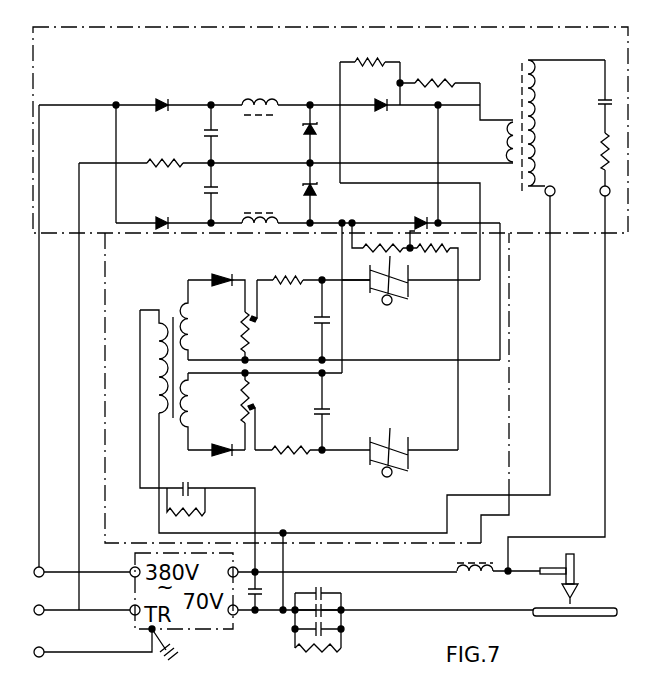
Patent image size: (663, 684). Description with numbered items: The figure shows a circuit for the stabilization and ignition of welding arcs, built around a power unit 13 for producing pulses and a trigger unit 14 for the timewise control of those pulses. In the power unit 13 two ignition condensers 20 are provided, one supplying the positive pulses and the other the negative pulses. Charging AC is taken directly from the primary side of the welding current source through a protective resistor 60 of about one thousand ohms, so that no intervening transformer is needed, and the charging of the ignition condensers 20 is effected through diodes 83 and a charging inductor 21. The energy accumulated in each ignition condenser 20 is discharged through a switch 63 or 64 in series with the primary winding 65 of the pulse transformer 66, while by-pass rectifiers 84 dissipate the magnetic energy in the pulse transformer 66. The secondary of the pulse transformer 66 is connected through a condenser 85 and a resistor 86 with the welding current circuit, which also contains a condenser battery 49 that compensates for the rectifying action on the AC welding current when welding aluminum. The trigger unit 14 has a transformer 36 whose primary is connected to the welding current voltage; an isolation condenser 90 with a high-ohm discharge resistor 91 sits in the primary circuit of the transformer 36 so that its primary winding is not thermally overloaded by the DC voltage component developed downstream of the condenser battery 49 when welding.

The power unit 13 is at (575, 233).
The trigger unit 14 is at (497, 403).
The ignition condenser 20 is at (213, 135).
The charging inductor 21 is at (258, 103).
The transformer 36 is at (173, 316).
The condenser battery 49 is at (342, 637).
The protective resistor 60 is at (160, 157).
The switch 63 is at (383, 98).
The switch 64 is at (420, 216).
The primary winding 65 is at (510, 140).
The pulse transformer 66 is at (523, 83).
The diode 83 is at (163, 100).
The by-pass rectifier 84 is at (304, 128).
The condenser 85 is at (597, 103).
The resistor 86 is at (600, 152).
The isolation condenser 90 is at (188, 486).
The discharge resistor 91 is at (203, 512).